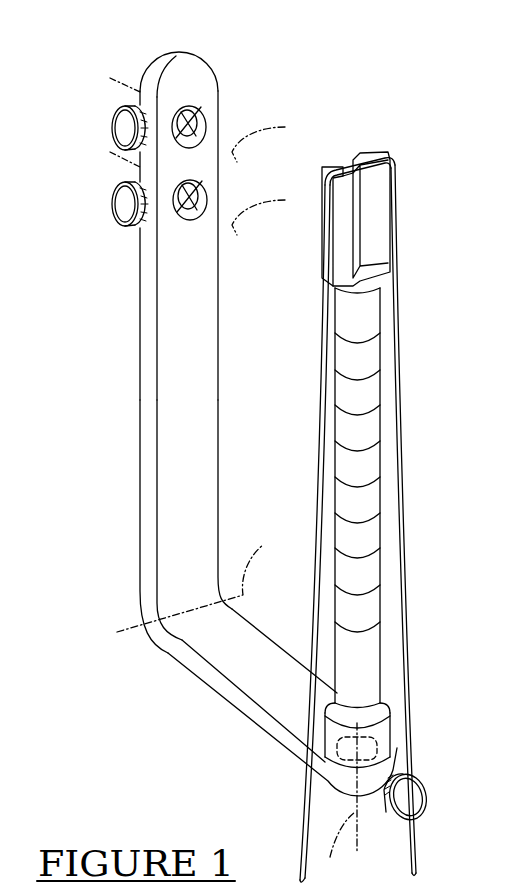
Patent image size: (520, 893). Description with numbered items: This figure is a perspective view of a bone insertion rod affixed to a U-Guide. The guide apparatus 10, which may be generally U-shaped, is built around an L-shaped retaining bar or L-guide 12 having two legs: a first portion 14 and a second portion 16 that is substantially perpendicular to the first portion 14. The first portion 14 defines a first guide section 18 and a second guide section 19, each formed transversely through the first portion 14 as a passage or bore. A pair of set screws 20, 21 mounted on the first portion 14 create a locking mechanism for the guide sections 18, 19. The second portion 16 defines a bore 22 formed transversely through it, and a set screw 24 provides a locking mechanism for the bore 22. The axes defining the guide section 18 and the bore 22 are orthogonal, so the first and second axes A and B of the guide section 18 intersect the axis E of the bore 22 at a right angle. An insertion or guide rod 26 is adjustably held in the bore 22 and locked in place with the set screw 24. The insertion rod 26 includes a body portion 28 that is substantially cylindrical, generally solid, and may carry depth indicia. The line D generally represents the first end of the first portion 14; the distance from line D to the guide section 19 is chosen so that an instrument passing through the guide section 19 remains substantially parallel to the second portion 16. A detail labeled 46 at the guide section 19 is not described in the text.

The guide apparatus 10 is at (120, 397).
The L-shaped retaining bar or L-guide 12 is at (157, 495).
The first portion 14 is at (157, 252).
The second portion 16 is at (240, 652).
The first guide section 18 is at (203, 187).
The second guide section 19 is at (203, 110).
The set screw 20 is at (118, 185).
The set screw 21 is at (118, 108).
The bore 22 is at (392, 725).
The set screw 24 is at (427, 797).
The insertion or guide rod 26 is at (382, 417).
The body portion 28 is at (367, 492).
The hole insert 46 is at (182, 117).
The first axis of guide section A is at (267, 138).
The second axis of guide section B is at (267, 211).
The line representing first end of first portion D is at (197, 576).
The axis of bore E is at (338, 849).